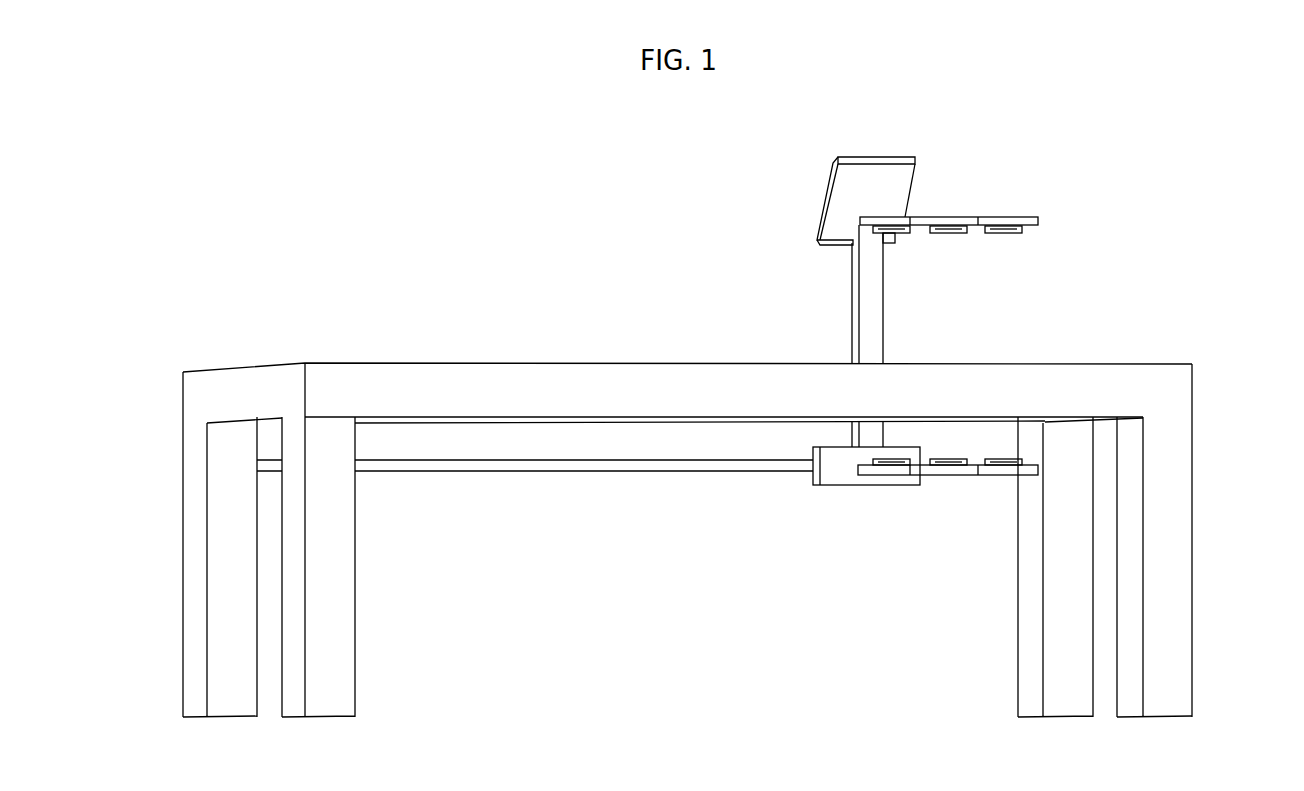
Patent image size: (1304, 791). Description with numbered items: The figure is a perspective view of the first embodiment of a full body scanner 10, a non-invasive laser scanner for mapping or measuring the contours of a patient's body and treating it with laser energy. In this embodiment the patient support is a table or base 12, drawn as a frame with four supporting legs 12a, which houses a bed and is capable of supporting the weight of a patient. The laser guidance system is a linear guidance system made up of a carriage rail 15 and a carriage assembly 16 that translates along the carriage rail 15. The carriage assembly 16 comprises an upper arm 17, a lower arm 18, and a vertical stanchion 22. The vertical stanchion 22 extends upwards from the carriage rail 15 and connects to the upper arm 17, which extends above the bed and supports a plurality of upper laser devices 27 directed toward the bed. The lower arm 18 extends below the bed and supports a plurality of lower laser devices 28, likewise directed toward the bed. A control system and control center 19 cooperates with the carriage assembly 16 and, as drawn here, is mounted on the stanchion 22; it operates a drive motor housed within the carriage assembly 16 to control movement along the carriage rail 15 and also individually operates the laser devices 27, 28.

The full body scanner 10 is at (420, 222).
The base 12 is at (245, 392).
The supporting legs 12a is at (193, 660).
The carriage rail 15 is at (588, 465).
The carriage assembly 16 is at (841, 472).
The upper arm 17 is at (1033, 216).
The lower arm 18 is at (868, 470).
The control system and control center 19 is at (890, 195).
The vertical stanchion 22 is at (868, 273).
The upper laser devices 27 is at (1003, 235).
The lower laser devices 28 is at (1003, 463).